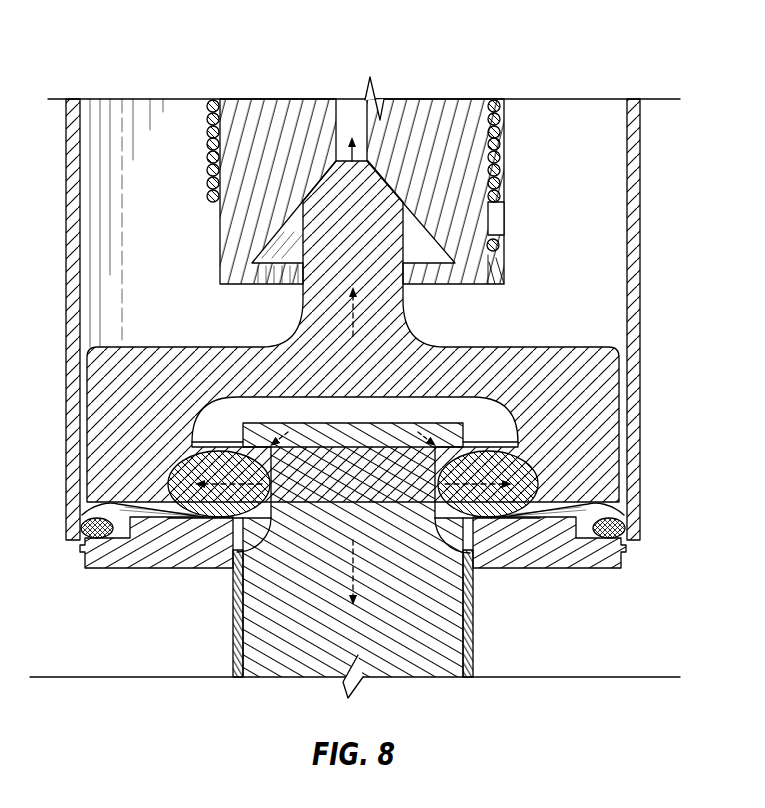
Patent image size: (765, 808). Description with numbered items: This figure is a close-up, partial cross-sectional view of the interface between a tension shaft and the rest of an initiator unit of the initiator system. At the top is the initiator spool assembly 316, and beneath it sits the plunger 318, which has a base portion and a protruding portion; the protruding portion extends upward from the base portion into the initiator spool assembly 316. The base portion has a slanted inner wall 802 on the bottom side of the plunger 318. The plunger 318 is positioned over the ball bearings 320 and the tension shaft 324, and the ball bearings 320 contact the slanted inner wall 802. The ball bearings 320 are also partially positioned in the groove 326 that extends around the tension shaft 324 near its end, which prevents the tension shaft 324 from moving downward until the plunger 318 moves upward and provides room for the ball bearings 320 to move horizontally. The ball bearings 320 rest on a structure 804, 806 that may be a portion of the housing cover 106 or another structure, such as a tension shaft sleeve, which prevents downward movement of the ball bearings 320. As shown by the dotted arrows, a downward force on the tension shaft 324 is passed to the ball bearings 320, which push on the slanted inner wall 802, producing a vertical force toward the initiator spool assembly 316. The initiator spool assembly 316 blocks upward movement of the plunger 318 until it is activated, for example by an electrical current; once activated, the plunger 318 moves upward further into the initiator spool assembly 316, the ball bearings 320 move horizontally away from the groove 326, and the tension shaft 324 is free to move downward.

The housing cover 106 is at (640, 262).
The initiator spool assembly 316 is at (442, 118).
The plunger 318 is at (595, 383).
The ball bearings 320 is at (197, 468).
The second tension shaft 324 is at (262, 617).
The groove 326 is at (272, 510).
The slanted inner wall 802 is at (158, 492).
The structure 804 is at (93, 570).
The structure 806 is at (598, 570).